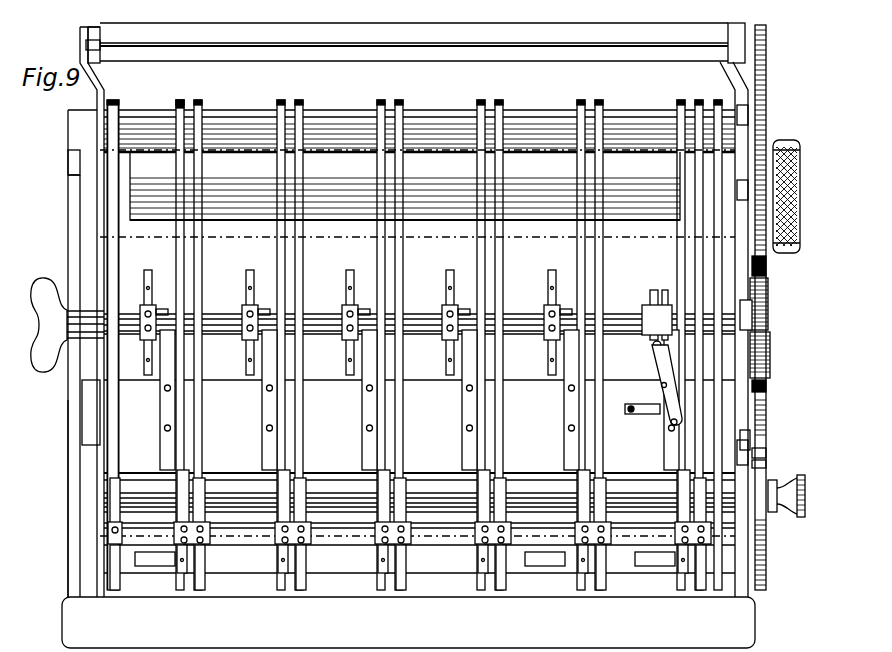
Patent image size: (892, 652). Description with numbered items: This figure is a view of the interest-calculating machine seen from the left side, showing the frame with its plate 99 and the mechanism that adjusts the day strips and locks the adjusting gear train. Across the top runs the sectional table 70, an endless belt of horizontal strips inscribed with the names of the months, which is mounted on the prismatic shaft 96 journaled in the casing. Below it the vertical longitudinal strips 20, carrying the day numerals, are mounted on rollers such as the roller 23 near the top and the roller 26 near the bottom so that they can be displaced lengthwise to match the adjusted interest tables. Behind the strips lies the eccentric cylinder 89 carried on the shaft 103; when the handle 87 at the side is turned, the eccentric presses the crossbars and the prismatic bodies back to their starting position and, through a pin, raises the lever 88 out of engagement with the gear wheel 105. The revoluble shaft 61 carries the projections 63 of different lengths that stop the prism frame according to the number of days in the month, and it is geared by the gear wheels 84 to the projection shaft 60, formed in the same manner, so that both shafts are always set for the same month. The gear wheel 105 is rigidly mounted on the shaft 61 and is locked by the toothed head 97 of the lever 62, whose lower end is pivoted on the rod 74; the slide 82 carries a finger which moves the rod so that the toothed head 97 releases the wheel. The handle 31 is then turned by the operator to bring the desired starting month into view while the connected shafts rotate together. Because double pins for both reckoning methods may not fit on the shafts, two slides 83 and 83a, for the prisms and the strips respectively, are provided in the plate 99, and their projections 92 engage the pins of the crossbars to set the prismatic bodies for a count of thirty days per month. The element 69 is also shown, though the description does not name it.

The longitudinal strip 20 is at (598, 102).
The roller 23 is at (127, 105).
The roller 26 is at (108, 492).
The handle 31 is at (796, 146).
The projection shaft 60 is at (112, 540).
The revoluble shaft 61 is at (232, 316).
The lever 62 is at (766, 383).
The projection 63 is at (350, 308).
The knurled disc 69 is at (804, 476).
The sectional table 70 is at (507, 48).
The rod 74 is at (760, 463).
The slide 82 is at (772, 500).
The slide 83 is at (632, 428).
The slide 83a is at (668, 372).
The gear wheels 84 is at (760, 455).
The handle 87 is at (48, 358).
The lever 88 is at (764, 258).
The eccentric cylinder 89 is at (547, 222).
The projection 92 is at (472, 308).
The prismatic shaft 96 is at (755, 43).
The toothed head 97 is at (766, 305).
The plate 99 is at (80, 455).
The shaft 103 is at (88, 200).
The gear wheel 105 is at (765, 345).